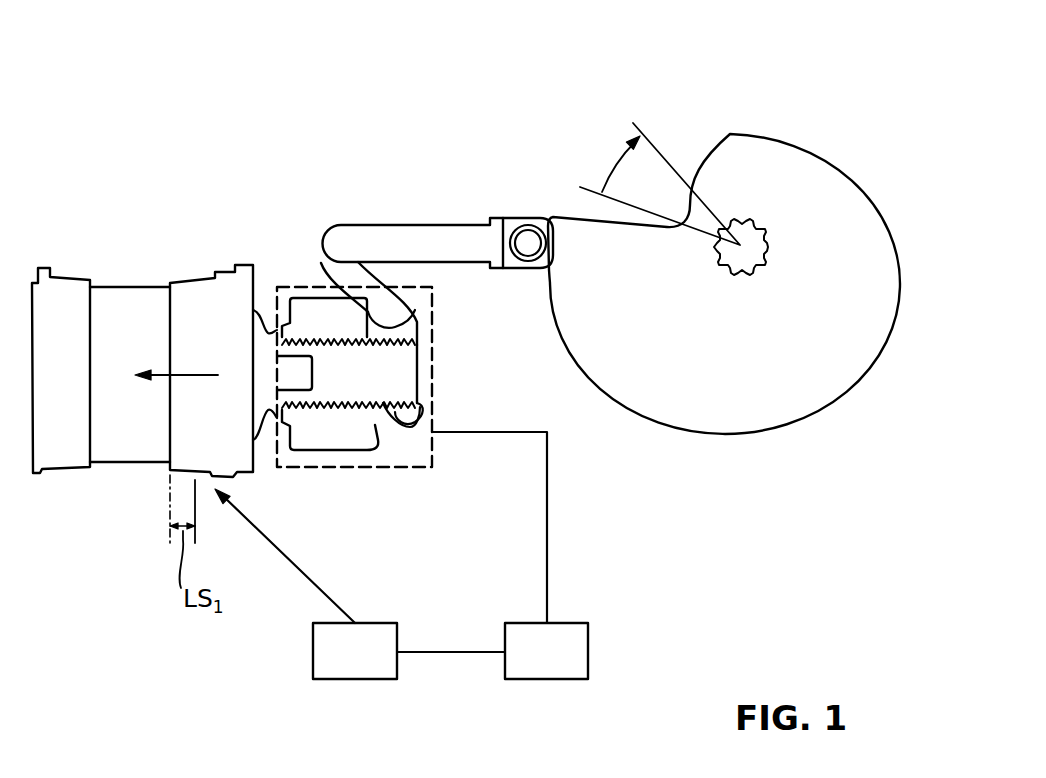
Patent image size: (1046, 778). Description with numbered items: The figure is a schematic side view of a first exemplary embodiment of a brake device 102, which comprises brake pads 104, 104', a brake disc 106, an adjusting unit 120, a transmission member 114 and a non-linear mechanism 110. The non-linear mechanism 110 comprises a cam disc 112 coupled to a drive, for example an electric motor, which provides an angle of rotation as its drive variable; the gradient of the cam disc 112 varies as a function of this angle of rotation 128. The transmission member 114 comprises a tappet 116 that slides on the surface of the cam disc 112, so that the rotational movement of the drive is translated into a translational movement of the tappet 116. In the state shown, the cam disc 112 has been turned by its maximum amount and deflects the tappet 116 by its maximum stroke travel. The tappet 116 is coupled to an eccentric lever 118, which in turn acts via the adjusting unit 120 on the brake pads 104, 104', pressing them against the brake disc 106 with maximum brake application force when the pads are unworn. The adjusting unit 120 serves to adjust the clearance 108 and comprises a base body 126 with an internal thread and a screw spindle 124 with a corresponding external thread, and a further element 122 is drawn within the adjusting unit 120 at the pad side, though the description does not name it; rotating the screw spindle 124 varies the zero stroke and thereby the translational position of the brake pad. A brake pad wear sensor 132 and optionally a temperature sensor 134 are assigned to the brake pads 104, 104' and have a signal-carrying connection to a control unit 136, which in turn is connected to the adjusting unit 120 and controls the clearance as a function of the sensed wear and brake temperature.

The brake device 102 is at (118, 226).
The brake pad 104 is at (61, 340).
The brake disc 106 is at (140, 313).
The brake pad 104' is at (211, 342).
The clearance 108 is at (224, 522).
The non-linear mechanism 110 is at (832, 110).
The cam disc 112 is at (717, 403).
The transmission member 114 is at (398, 180).
The tappet 116 is at (445, 235).
The eccentric lever 118 is at (318, 258).
The adjusting unit 120 is at (420, 442).
The clamping jaws 122 is at (263, 345).
The screw spindle 124 is at (336, 387).
The base body 126 is at (373, 438).
The angle of rotation 128 is at (652, 171).
The brake pad wear sensor 132 is at (348, 660).
The temperature sensor 134 is at (355, 651).
The control unit 136 is at (550, 660).